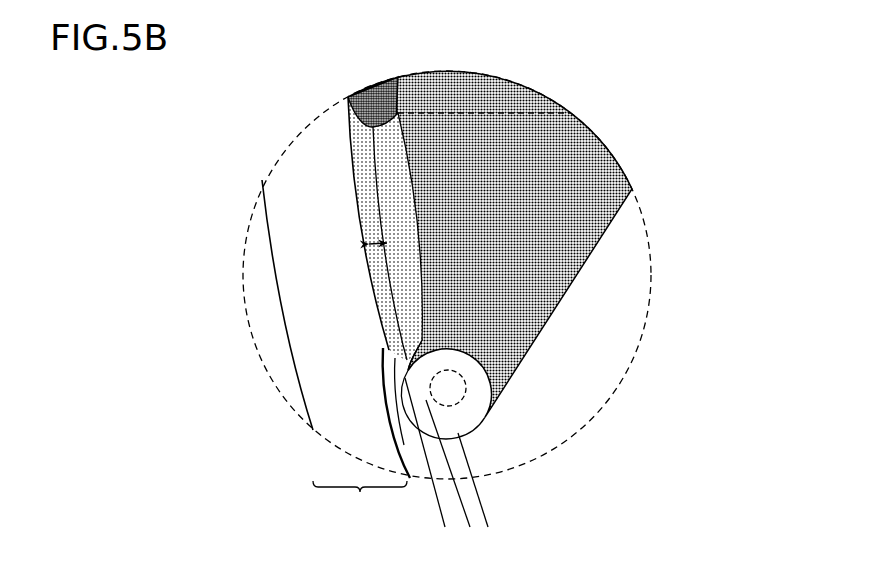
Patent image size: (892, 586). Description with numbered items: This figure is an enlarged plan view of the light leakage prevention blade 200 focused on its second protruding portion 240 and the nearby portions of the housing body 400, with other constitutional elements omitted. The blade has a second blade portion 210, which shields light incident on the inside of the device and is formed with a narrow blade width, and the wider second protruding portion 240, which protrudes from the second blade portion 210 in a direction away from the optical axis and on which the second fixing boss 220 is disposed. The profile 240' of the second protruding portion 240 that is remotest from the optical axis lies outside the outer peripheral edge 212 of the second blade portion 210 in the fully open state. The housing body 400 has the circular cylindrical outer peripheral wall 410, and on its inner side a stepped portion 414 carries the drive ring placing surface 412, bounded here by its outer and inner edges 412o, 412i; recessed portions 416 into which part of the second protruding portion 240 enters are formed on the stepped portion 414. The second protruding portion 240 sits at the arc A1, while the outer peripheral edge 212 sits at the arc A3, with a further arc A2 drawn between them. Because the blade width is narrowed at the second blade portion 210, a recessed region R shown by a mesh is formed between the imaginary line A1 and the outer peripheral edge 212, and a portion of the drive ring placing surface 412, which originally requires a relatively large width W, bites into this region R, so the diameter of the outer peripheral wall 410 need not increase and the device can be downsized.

The light leakage prevention blade 200 is at (600, 165).
The second blade portion 210 is at (574, 316).
The outer peripheral edge 212 is at (410, 298).
The second fixing boss 220 is at (467, 387).
The second protruding portion 240 is at (475, 447).
The profile 240' is at (300, 413).
The housing body 400 is at (290, 258).
The outer peripheral wall 410 is at (360, 499).
The drive ring placing surface 412 is at (383, 88).
The outer surface of layer 412o is at (357, 173).
The inner surface of layer 412i is at (386, 211).
The stepped portion 414 is at (386, 140).
The recessed portion 416 is at (401, 445).
The recessed region R is at (355, 93).
The width W is at (368, 243).
The imaginary line A1 is at (437, 505).
The position A2 is at (461, 507).
The arc A3 is at (483, 507).